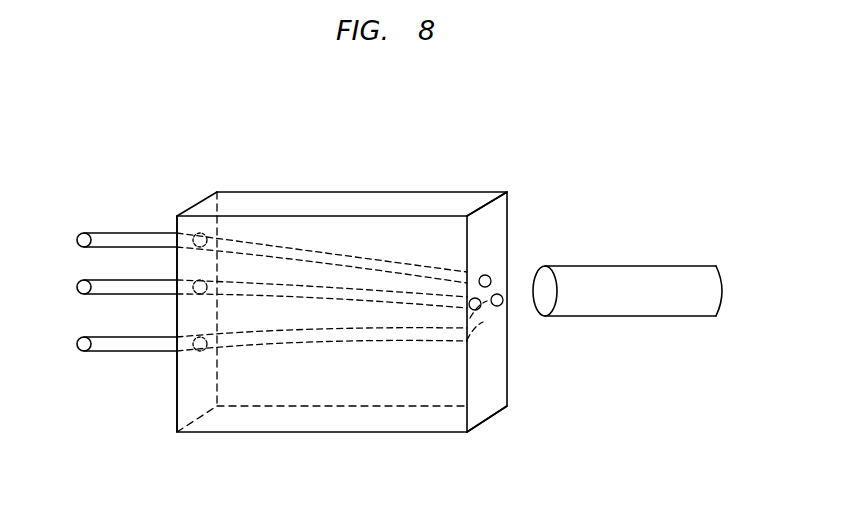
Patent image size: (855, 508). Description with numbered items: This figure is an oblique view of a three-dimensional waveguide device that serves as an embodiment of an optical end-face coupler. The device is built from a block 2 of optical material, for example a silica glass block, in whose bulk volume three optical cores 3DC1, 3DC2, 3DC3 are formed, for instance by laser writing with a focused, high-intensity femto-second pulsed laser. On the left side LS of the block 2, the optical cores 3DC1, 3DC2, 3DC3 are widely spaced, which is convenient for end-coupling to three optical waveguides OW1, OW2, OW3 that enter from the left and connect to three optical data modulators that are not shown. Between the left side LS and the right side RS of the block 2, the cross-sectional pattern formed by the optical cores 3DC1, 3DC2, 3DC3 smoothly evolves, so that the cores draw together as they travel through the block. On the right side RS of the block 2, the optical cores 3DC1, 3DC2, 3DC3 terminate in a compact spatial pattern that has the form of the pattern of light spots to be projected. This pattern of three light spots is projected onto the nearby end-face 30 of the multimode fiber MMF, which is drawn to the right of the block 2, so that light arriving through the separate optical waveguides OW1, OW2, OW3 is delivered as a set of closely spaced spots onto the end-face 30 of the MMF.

The block 2 is at (246, 395).
The left side LS is at (190, 383).
The right side RS is at (505, 388).
The output ports on right surface P is at (502, 263).
The optical core 3DC1 is at (333, 254).
The optical core 3DC2 is at (249, 295).
The optical core 3DC3 is at (265, 349).
The optical waveguide OW1 is at (80, 246).
The optical waveguide OW2 is at (80, 292).
The optical waveguide OW3 is at (80, 349).
The end-face 30 is at (546, 283).
The multimode fiber MMF is at (627, 291).